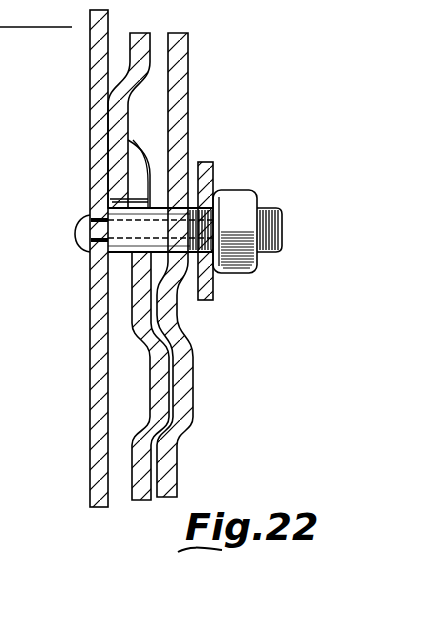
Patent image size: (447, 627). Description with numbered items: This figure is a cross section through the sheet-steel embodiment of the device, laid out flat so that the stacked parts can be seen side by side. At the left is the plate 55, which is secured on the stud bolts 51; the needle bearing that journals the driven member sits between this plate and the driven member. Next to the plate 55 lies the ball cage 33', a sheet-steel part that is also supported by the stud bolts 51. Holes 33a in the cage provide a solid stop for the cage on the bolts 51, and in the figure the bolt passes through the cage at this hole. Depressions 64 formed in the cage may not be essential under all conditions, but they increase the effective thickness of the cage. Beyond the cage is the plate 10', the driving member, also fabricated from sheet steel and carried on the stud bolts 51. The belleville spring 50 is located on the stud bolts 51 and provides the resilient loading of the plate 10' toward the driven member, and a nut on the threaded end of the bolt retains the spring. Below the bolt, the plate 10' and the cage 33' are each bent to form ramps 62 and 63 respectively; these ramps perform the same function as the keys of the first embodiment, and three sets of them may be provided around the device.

The plate 55 is at (98, 71).
The ball cage 33' is at (152, 250).
The plate 10' is at (201, 265).
The depressions 64 is at (112, 125).
The holes 33a is at (112, 207).
The belleville spring 50 is at (213, 175).
The stud bolts 51 is at (258, 205).
The ramps 62 is at (176, 312).
The ramps 63 is at (150, 387).